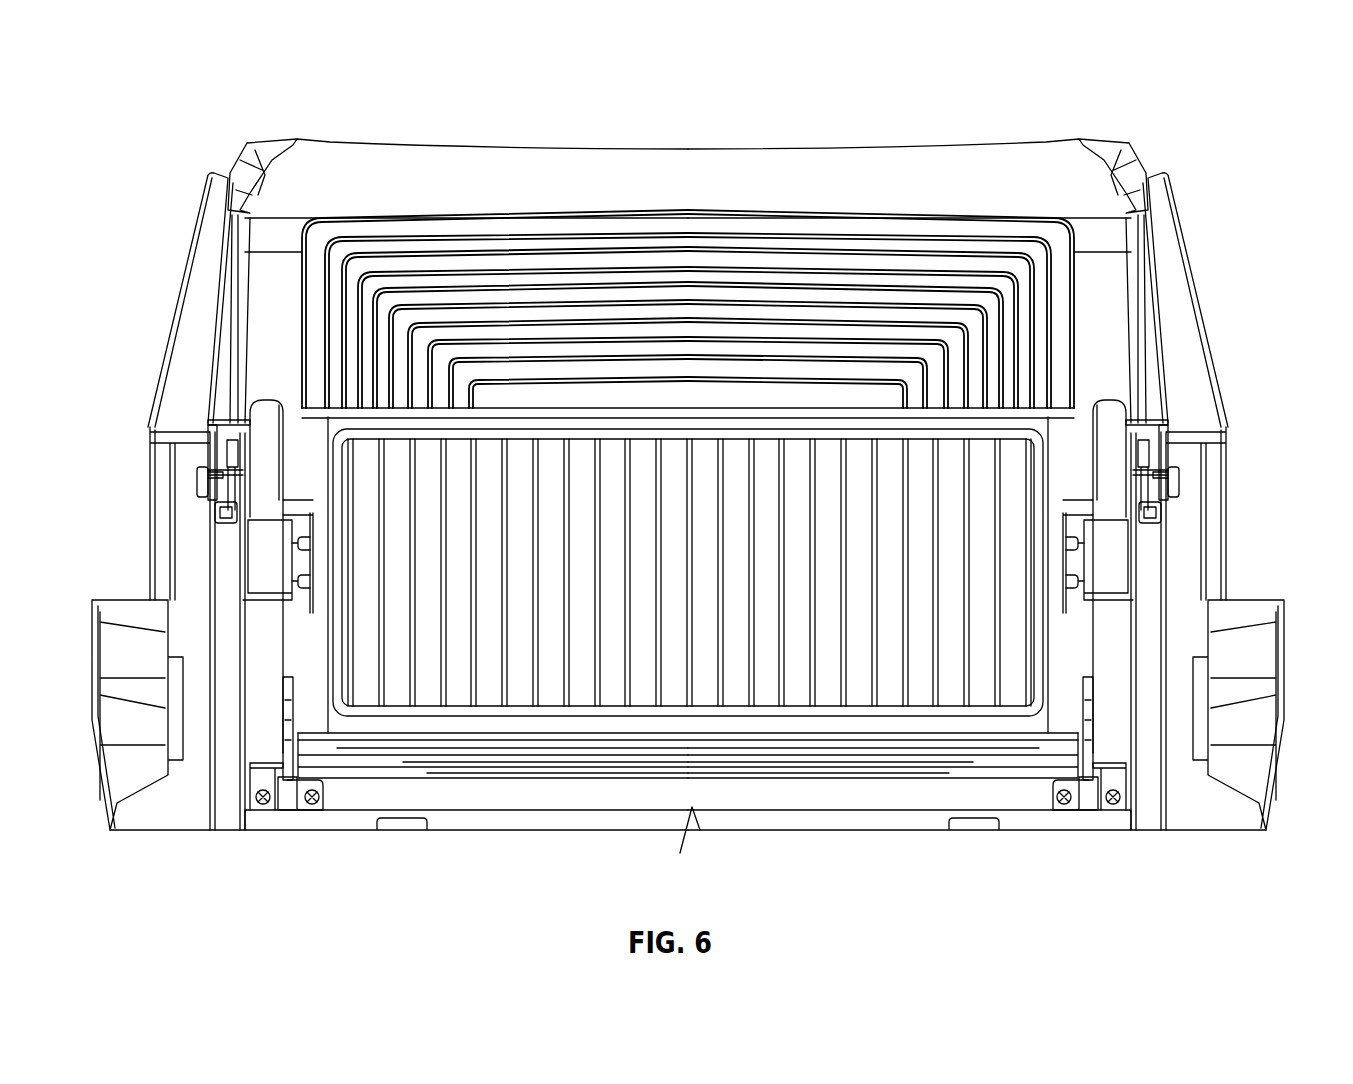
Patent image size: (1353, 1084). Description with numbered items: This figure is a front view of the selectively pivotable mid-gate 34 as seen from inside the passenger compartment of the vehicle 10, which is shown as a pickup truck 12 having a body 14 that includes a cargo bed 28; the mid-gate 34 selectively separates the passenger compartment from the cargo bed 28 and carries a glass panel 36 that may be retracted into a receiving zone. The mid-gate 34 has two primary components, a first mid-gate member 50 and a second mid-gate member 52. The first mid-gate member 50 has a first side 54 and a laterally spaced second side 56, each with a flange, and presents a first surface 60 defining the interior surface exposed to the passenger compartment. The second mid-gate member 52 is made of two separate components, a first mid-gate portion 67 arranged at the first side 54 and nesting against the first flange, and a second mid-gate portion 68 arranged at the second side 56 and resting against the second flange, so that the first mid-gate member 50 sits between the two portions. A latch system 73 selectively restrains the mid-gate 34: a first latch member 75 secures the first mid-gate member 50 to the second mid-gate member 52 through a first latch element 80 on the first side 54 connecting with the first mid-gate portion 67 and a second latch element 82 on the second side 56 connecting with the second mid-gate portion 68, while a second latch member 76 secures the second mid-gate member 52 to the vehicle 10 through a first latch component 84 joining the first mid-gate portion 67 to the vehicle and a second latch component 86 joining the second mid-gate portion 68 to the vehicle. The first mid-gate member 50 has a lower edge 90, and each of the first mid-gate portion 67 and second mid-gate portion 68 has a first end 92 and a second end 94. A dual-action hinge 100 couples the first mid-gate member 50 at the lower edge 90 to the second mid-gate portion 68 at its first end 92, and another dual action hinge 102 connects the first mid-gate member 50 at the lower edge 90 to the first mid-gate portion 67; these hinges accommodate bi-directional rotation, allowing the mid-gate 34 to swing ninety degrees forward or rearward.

The vehicle 10 is at (1258, 76).
The pickup truck 12 is at (1265, 547).
The body 14 is at (1188, 250).
The cargo bed 28 is at (758, 765).
The mid-gate 34 is at (335, 405).
The glass panel 36 is at (573, 268).
The first mid-gate member 50 is at (402, 410).
The second mid-gate member 52 is at (236, 603).
The first side 54 is at (1110, 478).
The second side 56 is at (226, 475).
The first surface 60 is at (813, 733).
The first mid-gate portion 67 is at (1165, 548).
The second mid-gate portion 68 is at (262, 580).
The latch system 73 is at (218, 444).
The first latch member 75 is at (312, 581).
The second latch member 76 is at (221, 515).
The first latch element 80 is at (1065, 550).
The second latch element 82 is at (312, 542).
The first latch component 84 is at (1150, 530).
The second latch component 86 is at (211, 455).
The lower edge 90 is at (443, 793).
The first end 92 is at (268, 748).
The second end 94 is at (261, 410).
The dual-action hinge 100 is at (289, 786).
The dual action hinge 102 is at (1093, 792).